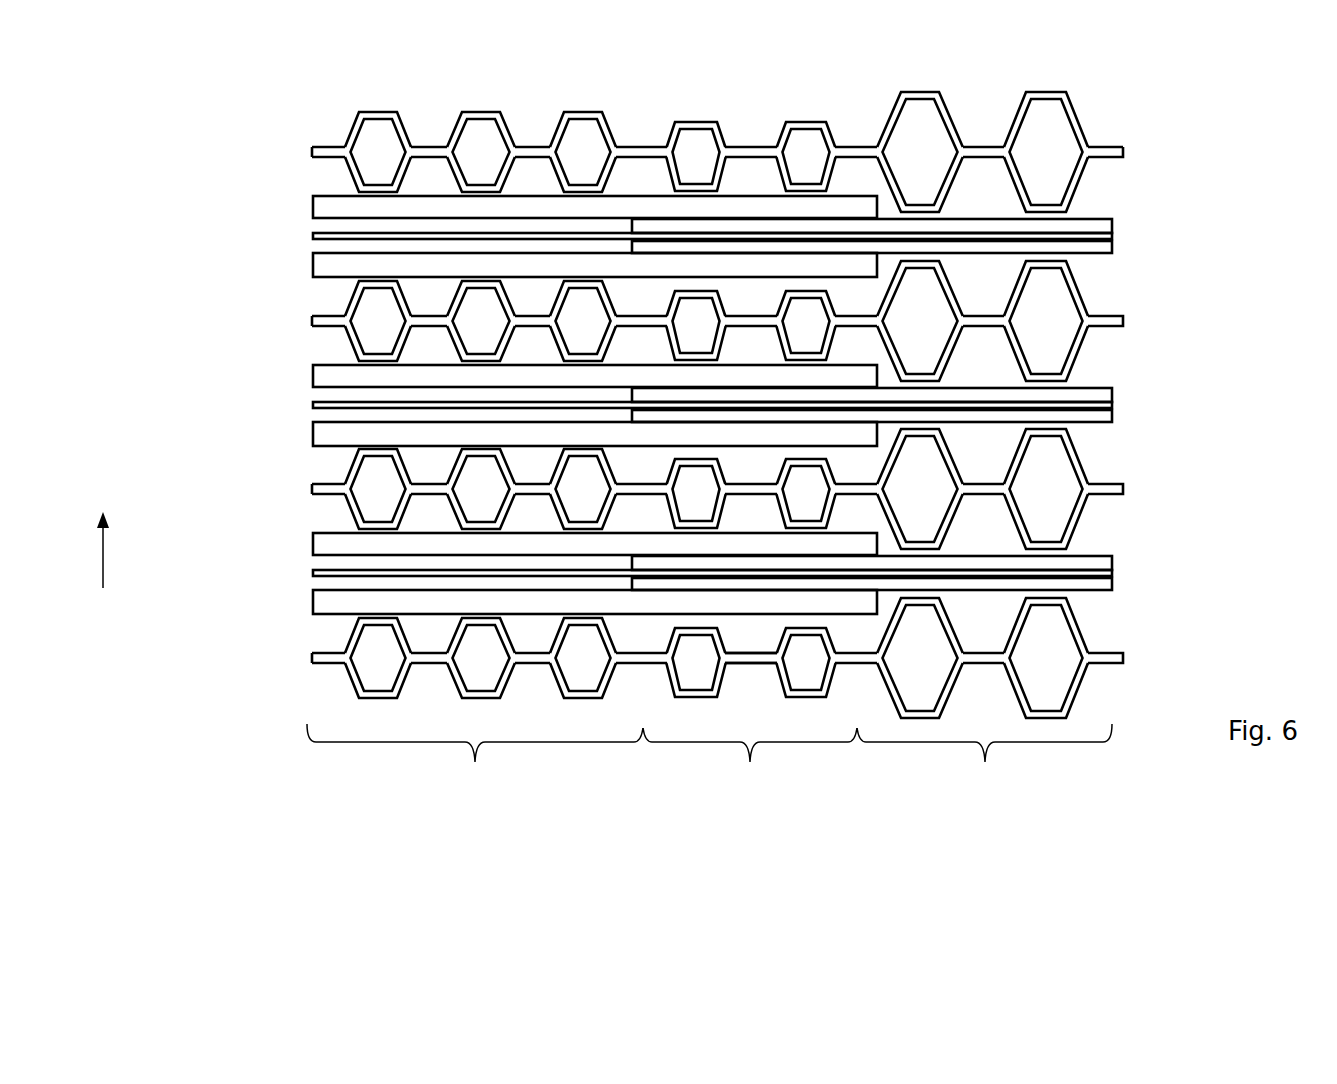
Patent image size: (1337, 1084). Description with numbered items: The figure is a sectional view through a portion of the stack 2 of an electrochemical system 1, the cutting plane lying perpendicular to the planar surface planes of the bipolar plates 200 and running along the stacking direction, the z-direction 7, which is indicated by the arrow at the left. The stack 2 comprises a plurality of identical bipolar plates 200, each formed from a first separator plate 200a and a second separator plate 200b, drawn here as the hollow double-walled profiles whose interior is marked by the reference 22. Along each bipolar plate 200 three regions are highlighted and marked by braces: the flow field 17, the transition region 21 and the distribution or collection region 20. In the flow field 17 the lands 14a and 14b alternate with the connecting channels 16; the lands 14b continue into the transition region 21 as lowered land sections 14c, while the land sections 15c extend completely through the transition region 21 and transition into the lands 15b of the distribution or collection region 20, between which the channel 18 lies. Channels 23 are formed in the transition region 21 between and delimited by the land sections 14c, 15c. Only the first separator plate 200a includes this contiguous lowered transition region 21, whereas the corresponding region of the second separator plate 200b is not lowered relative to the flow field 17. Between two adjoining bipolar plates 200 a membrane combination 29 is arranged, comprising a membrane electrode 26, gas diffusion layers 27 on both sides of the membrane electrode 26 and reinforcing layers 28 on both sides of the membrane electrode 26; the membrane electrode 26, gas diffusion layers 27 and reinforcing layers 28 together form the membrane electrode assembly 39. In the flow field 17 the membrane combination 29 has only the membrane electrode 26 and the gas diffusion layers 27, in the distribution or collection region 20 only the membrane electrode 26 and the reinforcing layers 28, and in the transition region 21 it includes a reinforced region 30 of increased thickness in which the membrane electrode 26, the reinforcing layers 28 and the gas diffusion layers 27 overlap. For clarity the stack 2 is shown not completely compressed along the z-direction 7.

The electrochemical system 1 is at (217, 453).
The stack 2 is at (213, 236).
The z-direction 7 is at (103, 558).
The land 14a is at (481, 152).
The land 14b is at (480, 152).
The lowered land section 14c is at (805, 156).
The land of the distribution or collection region 15b is at (982, 152).
The land section 15c is at (695, 156).
The connecting channel 16 is at (480, 152).
The flow field 17 is at (475, 760).
The connecting channel 18 is at (983, 152).
The distribution or collection region 20 is at (984, 760).
The transition region 21 is at (750, 762).
The hollow interior 22 is at (378, 152).
The channel 23 is at (746, 152).
The membrane electrode 26 is at (312, 236).
The gas diffusion layer 27 is at (312, 207).
The reinforcing layer 28 is at (979, 219).
The membrane combination 29 is at (195, 722).
The reinforced region 30 is at (765, 641).
The membrane electrode assembly 39 is at (195, 827).
The bipolar plate 200 is at (1139, 159).
The first separator plate 200a is at (717, 152).
The second separator plate 200b is at (717, 152).